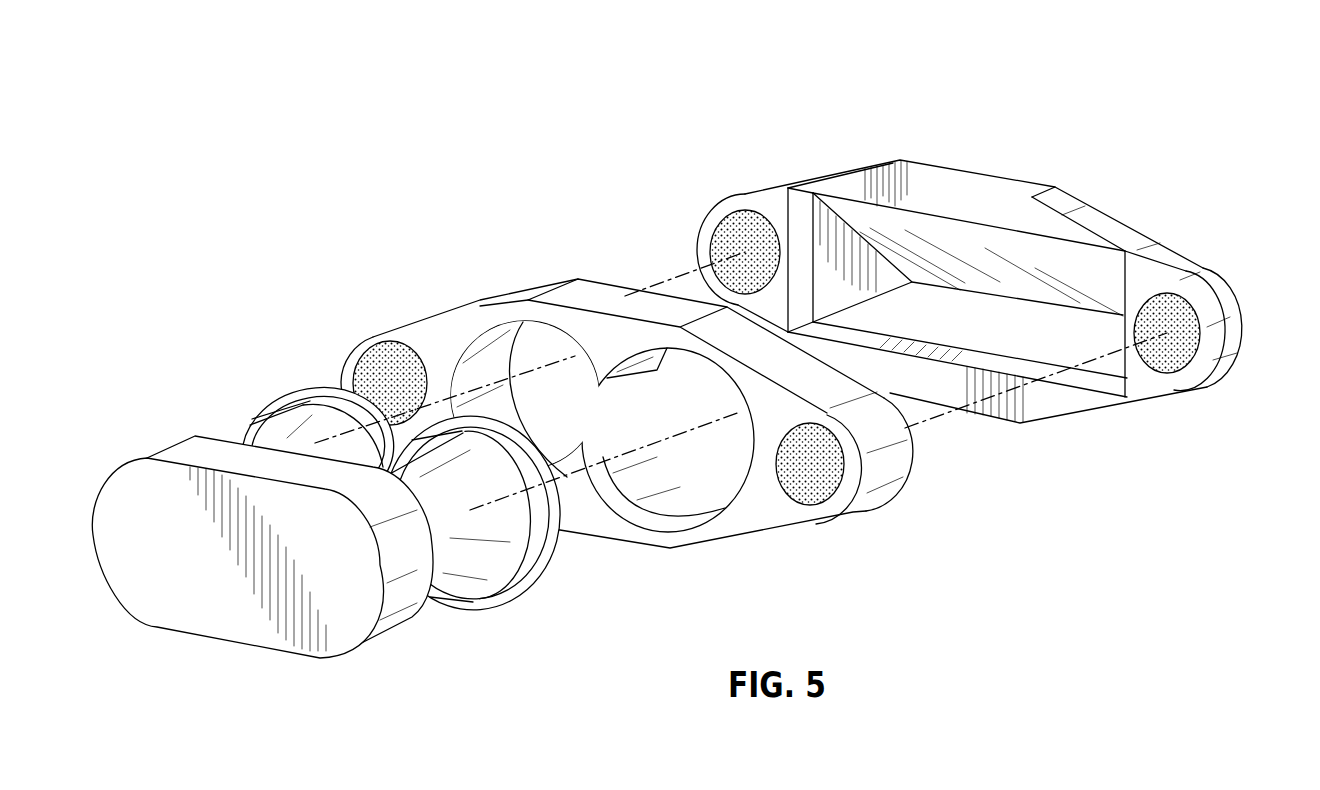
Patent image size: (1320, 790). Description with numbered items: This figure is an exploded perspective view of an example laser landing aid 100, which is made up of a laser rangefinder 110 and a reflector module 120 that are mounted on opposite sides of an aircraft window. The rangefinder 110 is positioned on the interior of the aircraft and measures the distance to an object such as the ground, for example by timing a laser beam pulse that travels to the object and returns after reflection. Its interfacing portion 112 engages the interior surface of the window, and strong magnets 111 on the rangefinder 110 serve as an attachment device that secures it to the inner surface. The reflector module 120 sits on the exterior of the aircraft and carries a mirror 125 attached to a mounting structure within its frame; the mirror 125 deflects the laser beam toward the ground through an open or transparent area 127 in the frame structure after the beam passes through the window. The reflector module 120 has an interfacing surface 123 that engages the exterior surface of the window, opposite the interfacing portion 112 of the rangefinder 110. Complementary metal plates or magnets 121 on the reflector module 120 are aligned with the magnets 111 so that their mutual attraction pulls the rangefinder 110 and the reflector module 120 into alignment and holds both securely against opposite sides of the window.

The laser landing aid 100 is at (403, 138).
The laser rangefinder 110 is at (362, 281).
The magnet 111 is at (381, 415).
The interfacing portion 112 is at (763, 505).
The reflector module 120 is at (812, 158).
The magnet 121 is at (753, 253).
The interfacing surface 123 is at (1145, 277).
The mirror 125 is at (987, 257).
The open area 127 is at (1030, 320).